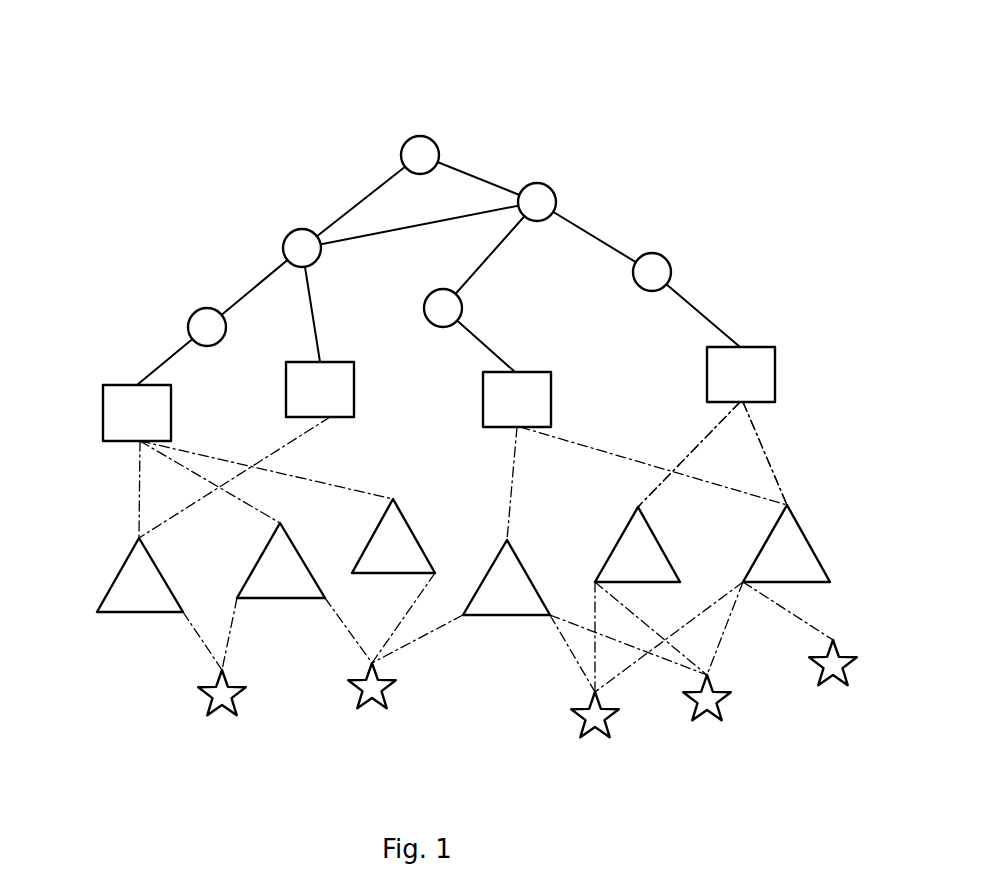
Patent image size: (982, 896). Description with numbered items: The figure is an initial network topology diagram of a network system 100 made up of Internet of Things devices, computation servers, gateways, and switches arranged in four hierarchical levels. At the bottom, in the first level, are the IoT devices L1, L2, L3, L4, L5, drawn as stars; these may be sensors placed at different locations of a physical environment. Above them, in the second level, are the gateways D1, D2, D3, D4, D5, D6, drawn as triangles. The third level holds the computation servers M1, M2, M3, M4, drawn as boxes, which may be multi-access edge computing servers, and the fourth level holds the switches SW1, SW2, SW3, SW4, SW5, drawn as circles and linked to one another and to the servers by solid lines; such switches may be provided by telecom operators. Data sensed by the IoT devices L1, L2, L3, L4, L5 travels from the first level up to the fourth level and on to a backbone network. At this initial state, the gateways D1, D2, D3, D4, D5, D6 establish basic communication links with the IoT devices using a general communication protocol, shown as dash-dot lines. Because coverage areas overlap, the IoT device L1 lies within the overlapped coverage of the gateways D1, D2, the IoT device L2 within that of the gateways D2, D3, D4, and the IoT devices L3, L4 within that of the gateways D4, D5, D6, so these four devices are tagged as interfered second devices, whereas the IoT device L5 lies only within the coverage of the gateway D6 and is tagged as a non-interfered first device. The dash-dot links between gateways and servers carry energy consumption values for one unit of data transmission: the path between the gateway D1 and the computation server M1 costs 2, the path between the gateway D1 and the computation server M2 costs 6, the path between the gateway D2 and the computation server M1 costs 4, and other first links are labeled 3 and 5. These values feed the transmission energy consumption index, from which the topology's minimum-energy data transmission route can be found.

The network system 100 is at (122, 50).
The switch SW1 is at (195, 314).
The switch SW2 is at (290, 233).
The switch SW3 is at (430, 292).
The switch SW4 is at (551, 188).
The switch SW5 is at (666, 257).
The computation server M1 is at (103, 412).
The computation server M2 is at (286, 388).
The computation server M3 is at (483, 398).
The computation server M4 is at (707, 372).
The gateway D1 is at (122, 565).
The gateway D2 is at (295, 548).
The gateway D3 is at (406, 522).
The gateway D4 is at (522, 565).
The gateway D5 is at (655, 535).
The gateway D6 is at (805, 535).
The IoT device L1 is at (220, 717).
The IoT device L2 is at (372, 710).
The IoT device L3 is at (595, 737).
The IoT device L4 is at (707, 720).
The IoT device L5 is at (833, 685).
The energy consumption of the path 2 is at (137, 460).
The energy consumption of the path 3 is at (510, 480).
The energy consumption of the path 4 is at (258, 503).
The energy consumption of the path 5 is at (320, 480).
The energy consumption of the path 6 is at (192, 502).